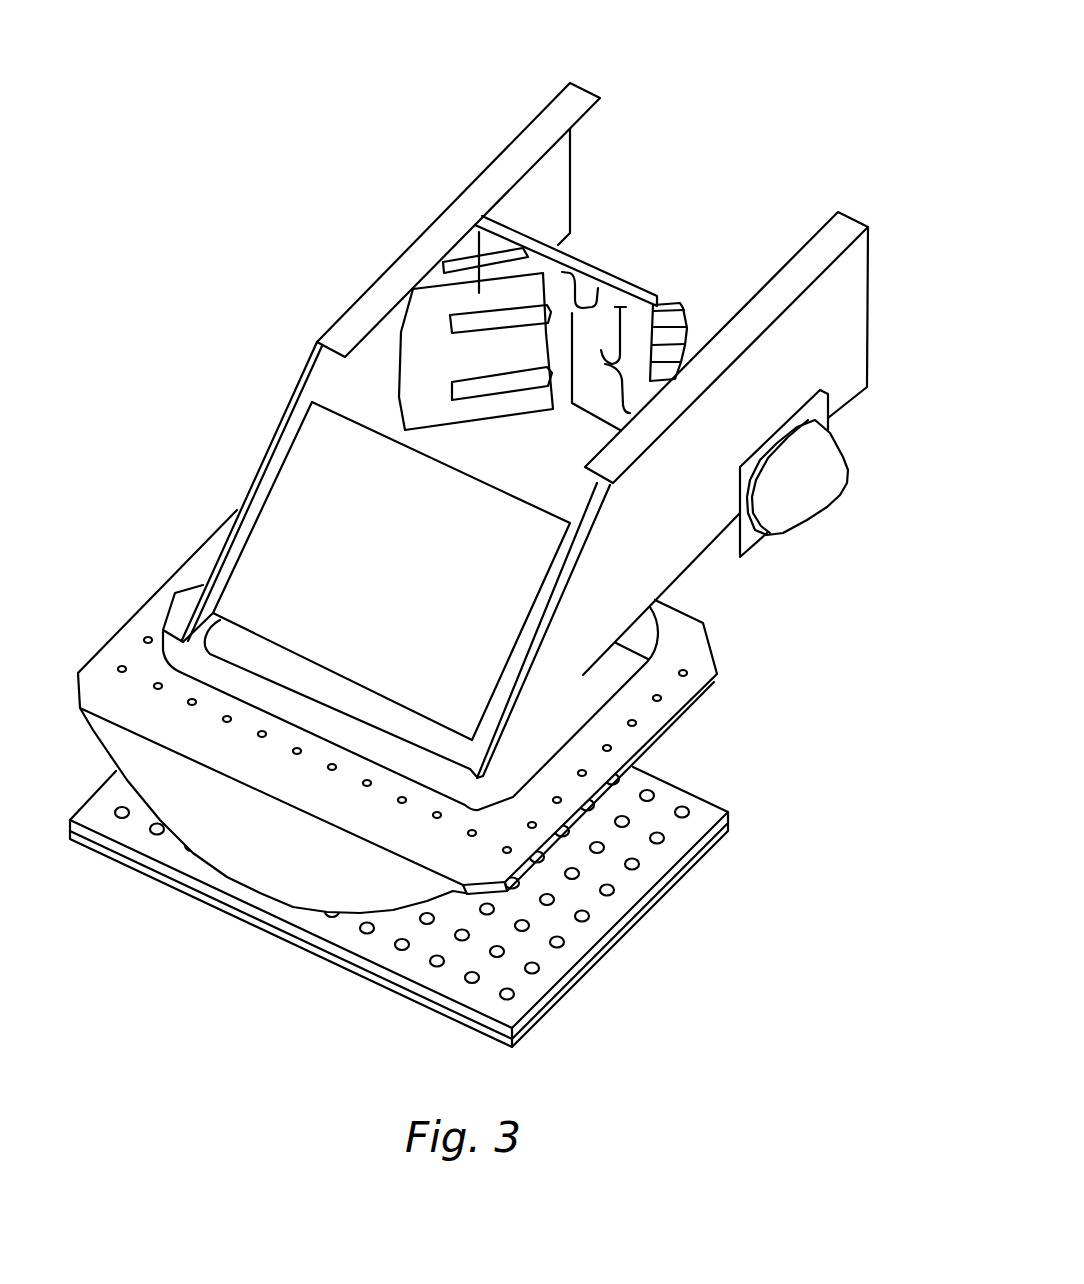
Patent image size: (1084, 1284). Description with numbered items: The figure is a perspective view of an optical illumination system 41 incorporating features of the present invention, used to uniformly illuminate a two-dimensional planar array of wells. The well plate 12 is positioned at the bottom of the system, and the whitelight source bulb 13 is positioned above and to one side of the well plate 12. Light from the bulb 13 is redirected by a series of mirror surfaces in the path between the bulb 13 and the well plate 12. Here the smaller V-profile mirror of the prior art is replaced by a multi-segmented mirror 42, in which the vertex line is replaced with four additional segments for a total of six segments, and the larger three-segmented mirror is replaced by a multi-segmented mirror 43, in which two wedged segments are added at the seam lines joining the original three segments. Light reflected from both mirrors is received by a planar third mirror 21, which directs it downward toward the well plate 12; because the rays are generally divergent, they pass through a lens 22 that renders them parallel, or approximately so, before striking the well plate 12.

The illumination system 41 is at (408, 124).
The multi-segmented mirror 43 is at (598, 288).
The multi-segmented mirror 42 is at (600, 347).
The whitelight source bulb 13 is at (848, 464).
The third mirror 21 is at (520, 637).
The lens 22 is at (687, 712).
The well plate 12 is at (647, 917).